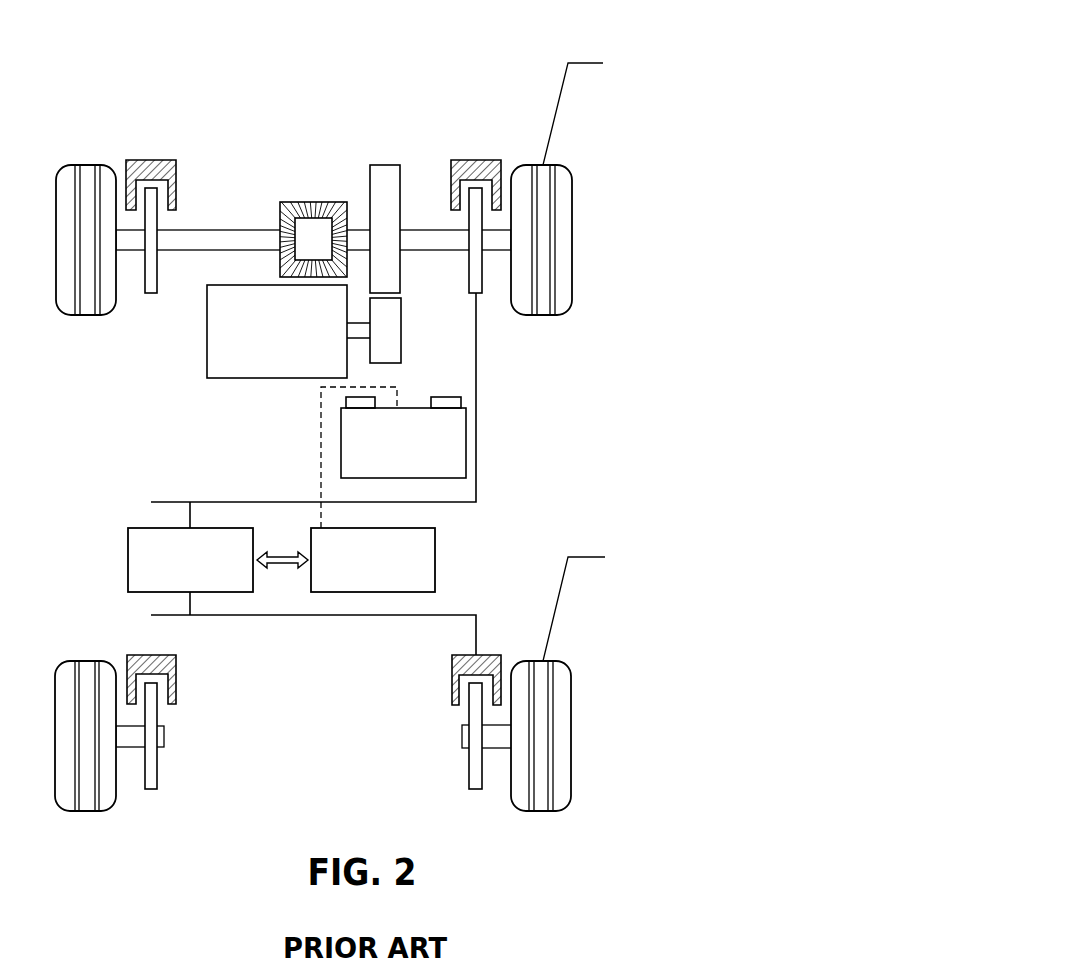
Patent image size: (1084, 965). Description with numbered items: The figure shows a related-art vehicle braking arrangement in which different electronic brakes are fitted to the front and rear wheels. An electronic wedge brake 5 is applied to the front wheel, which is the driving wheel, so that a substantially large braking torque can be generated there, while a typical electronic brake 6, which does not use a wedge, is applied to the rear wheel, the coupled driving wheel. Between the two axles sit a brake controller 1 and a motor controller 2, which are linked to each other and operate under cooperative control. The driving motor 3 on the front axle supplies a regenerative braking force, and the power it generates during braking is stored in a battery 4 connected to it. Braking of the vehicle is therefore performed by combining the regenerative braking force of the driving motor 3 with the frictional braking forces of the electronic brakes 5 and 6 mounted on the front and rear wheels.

The brake controller 1 is at (128, 565).
The motor controller 2 is at (435, 562).
The driving motor 3 is at (262, 378).
The battery 4 is at (466, 445).
The electronic wedge brake 5 is at (440, 158).
The typical electro-mechanical brake 6 is at (187, 785).